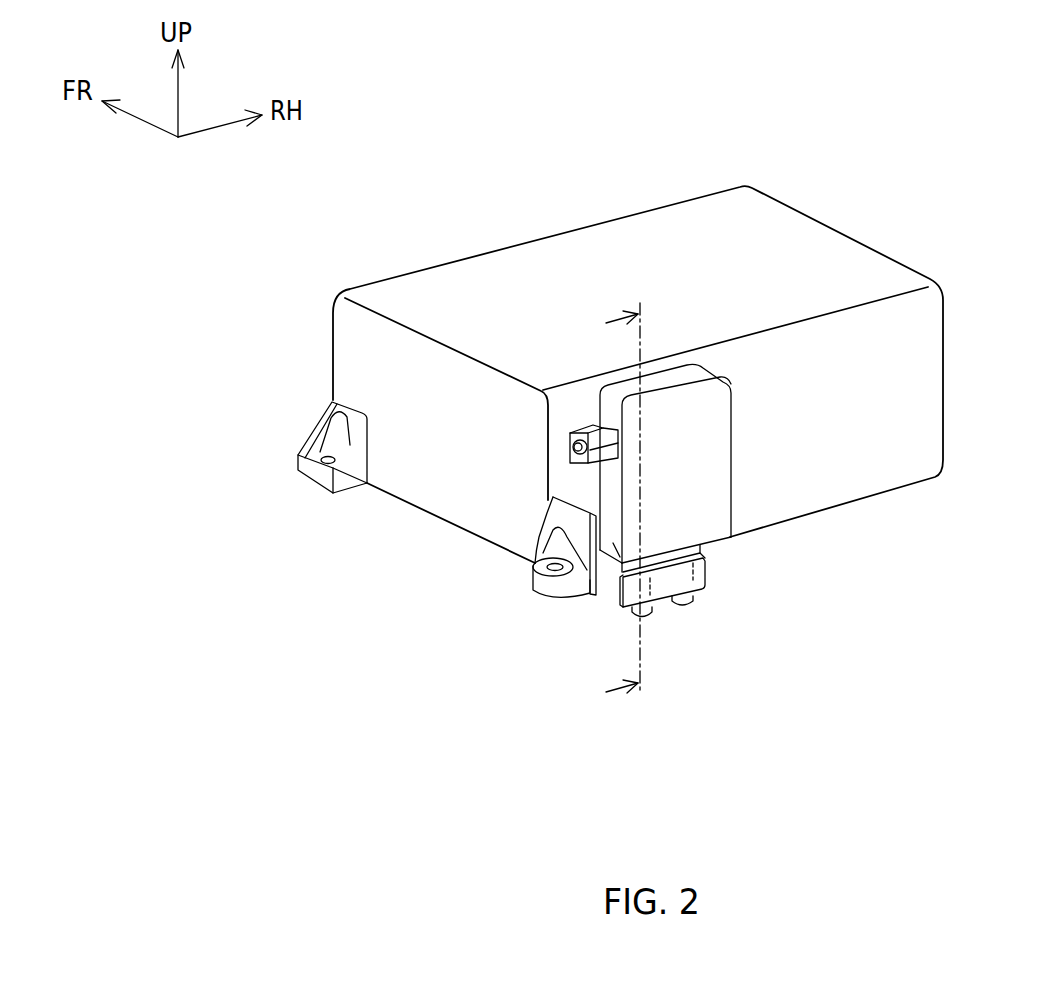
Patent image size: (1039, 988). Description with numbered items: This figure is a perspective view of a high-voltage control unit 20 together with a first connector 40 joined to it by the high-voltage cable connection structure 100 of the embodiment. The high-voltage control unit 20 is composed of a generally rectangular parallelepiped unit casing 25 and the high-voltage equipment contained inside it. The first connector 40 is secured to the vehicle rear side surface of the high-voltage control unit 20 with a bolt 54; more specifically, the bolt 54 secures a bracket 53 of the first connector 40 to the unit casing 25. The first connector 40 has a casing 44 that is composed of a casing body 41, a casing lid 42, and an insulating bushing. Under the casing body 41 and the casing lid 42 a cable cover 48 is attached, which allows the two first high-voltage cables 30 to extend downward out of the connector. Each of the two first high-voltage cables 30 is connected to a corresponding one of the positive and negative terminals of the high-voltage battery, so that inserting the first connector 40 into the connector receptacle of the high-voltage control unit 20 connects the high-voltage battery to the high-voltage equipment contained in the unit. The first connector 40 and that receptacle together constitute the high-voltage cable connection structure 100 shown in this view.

The high-voltage control unit 20 is at (671, 319).
The unit casing 25 is at (872, 247).
The first high-voltage cables 30 is at (645, 618).
The first connector 40 is at (720, 502).
The casing body 41 is at (610, 592).
The casing lid 42 is at (712, 447).
The casing 44 is at (710, 520).
The cable cover 48 is at (708, 590).
The bracket 53 is at (572, 433).
The bolt 54 is at (570, 457).
The high-voltage cable connection structure 100 is at (654, 448).